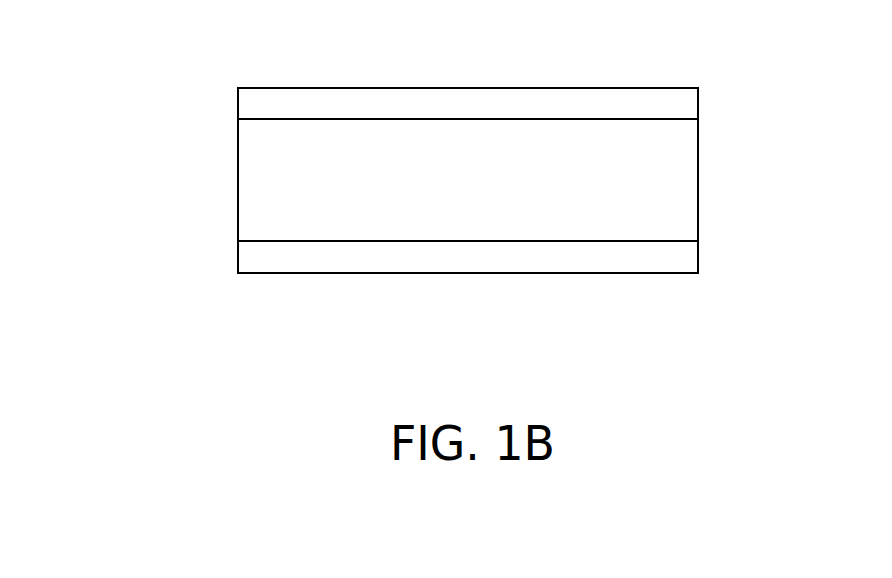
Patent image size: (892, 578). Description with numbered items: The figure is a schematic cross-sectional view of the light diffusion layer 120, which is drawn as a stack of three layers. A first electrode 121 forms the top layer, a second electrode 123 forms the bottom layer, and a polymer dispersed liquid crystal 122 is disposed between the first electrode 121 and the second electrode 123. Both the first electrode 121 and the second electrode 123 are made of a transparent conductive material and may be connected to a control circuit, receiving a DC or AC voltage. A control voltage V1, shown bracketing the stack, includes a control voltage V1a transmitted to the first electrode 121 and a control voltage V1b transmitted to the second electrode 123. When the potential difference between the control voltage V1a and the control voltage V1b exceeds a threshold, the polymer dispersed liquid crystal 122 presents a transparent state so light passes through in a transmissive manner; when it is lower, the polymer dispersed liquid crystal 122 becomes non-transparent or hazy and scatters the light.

The light diffusion layer 120 is at (693, 299).
The first electrode 121 is at (670, 105).
The polymer dispersed liquid crystal 122 is at (670, 185).
The second electrode 123 is at (670, 260).
The control voltage V1 is at (105, 95).
The control voltage V1a is at (237, 102).
The control voltage V1b is at (237, 258).